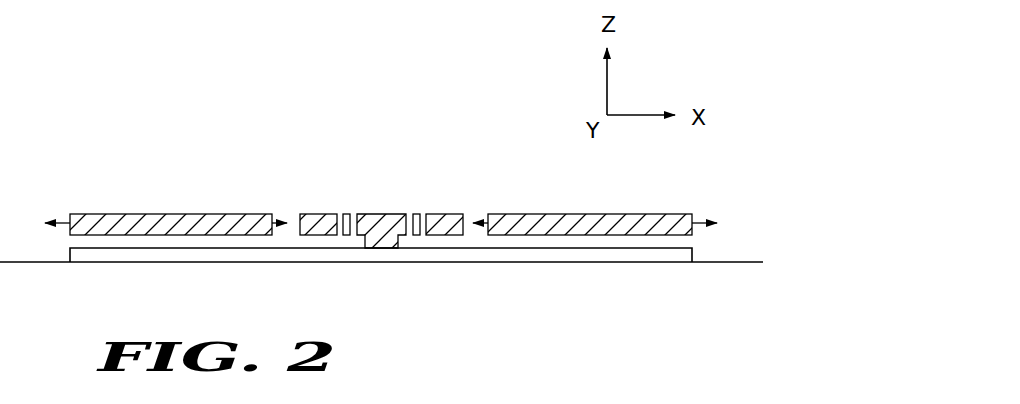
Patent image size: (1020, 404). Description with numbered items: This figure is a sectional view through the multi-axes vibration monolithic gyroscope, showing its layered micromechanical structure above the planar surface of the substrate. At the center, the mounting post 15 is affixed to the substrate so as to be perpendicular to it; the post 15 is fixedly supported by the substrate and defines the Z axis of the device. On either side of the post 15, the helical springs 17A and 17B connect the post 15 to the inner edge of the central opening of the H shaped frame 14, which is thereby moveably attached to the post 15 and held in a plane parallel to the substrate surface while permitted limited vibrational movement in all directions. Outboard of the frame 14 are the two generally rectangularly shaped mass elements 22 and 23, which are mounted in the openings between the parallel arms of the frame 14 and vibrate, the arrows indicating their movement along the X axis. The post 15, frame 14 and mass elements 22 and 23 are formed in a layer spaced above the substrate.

The mass element 22 is at (187, 213).
The H shaped frame 14 is at (300, 213).
The helical spring 17A is at (347, 214).
The mounting post 15 is at (383, 214).
The helical spring 17B is at (422, 214).
The mass element 23 is at (575, 213).